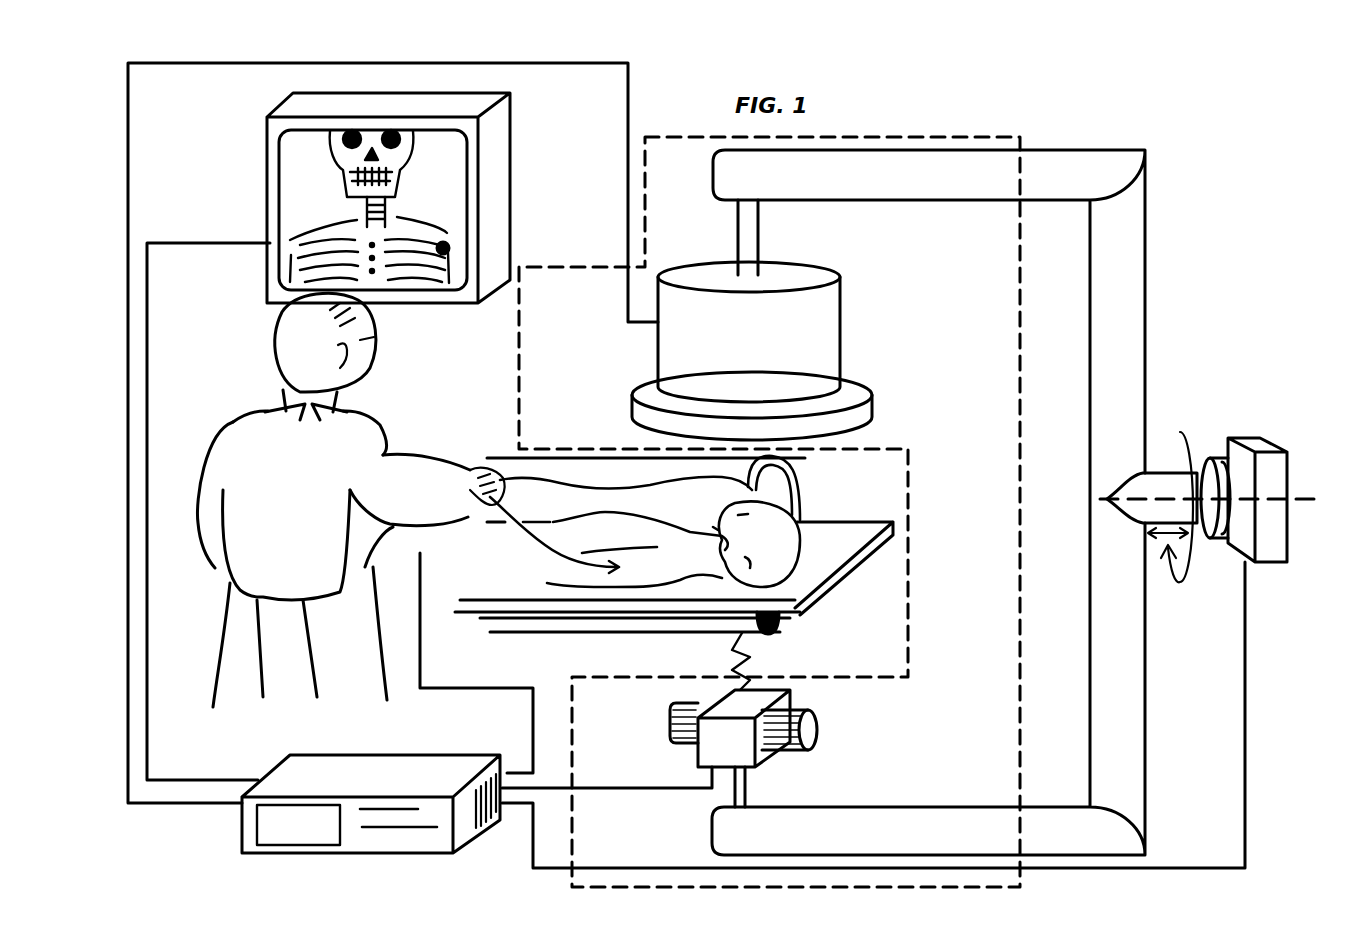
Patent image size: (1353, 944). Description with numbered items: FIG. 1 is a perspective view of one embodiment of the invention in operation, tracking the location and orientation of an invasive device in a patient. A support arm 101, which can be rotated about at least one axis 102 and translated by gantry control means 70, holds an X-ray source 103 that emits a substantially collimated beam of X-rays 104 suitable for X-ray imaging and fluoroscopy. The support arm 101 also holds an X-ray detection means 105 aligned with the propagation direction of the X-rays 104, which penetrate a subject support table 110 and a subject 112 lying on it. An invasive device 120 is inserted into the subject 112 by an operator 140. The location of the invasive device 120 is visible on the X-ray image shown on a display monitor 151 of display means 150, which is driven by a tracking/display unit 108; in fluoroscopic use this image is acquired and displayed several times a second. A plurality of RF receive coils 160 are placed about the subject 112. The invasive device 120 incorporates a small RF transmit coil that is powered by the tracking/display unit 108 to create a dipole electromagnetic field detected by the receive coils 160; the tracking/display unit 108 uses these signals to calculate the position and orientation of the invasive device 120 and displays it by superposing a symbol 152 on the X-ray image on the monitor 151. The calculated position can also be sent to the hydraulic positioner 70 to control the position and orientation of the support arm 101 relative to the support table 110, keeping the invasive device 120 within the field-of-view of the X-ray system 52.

The X-ray system 52 is at (932, 136).
The gantry control means 70 is at (1248, 438).
The support arm 101 is at (1158, 470).
The axis 102 is at (1213, 525).
The X-ray source 103 is at (690, 727).
The X-rays 104 is at (752, 660).
The X-ray detection means 105 is at (845, 300).
The tracking/display unit 108 is at (242, 818).
The subject support table 110 is at (882, 545).
The subject 112 is at (647, 572).
The invasive device 120 is at (517, 527).
The operator 140 is at (365, 647).
The display means 150 is at (300, 174).
The display monitor 151 is at (510, 120).
The symbol 152 is at (443, 248).
The RF receive coils 160 is at (558, 460).